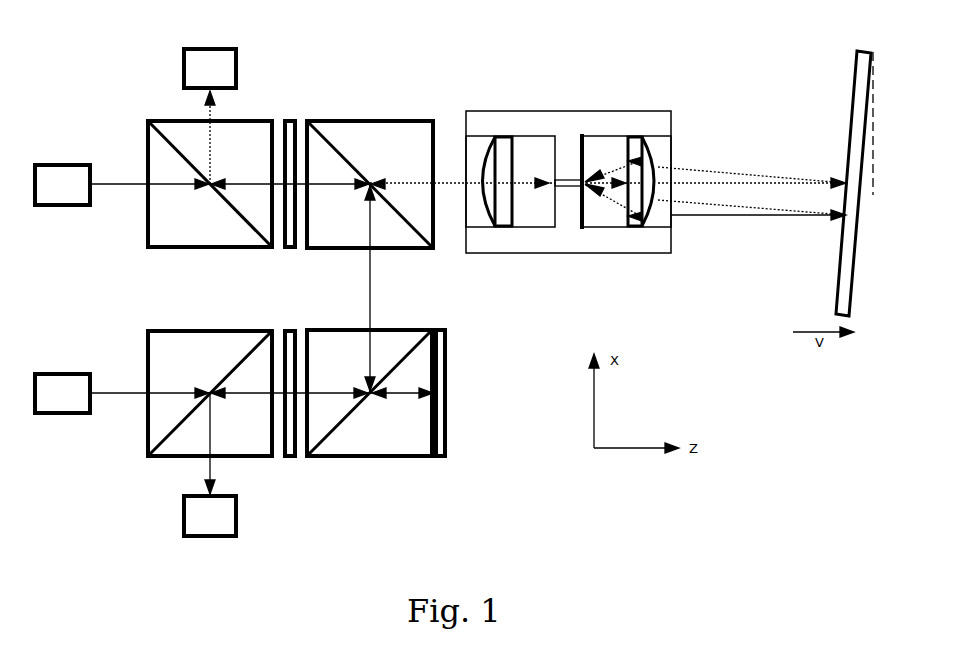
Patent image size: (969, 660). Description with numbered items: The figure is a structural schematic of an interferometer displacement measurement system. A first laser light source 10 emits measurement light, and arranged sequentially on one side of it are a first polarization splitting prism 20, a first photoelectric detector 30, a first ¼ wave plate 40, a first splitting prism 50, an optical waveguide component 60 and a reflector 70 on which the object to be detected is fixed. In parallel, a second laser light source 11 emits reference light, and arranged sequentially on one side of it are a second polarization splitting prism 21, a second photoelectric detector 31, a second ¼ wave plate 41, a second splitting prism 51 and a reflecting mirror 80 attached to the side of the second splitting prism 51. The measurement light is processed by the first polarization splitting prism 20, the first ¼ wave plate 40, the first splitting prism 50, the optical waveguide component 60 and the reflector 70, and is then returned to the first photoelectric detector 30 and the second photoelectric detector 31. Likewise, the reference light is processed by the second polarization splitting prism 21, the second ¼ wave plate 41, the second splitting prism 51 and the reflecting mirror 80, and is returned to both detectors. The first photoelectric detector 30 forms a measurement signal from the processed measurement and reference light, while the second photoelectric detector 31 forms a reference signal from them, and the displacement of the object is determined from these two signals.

The first laser light source 10 is at (62, 162).
The second laser light source 11 is at (62, 372).
The first polarization splitting prism 20 is at (146, 238).
The second polarization splitting prism 21 is at (146, 352).
The first photoelectric detector 30 is at (209, 47).
The second photoelectric detector 31 is at (212, 540).
The first ¼ wave plate 40 is at (291, 118).
The second ¼ wave plate 41 is at (291, 460).
The first splitting prism 50 is at (369, 118).
The second splitting prism 51 is at (369, 460).
The optical waveguide component 60 is at (566, 110).
The reflector 70 is at (856, 92).
The reflecting mirror 80 is at (441, 460).